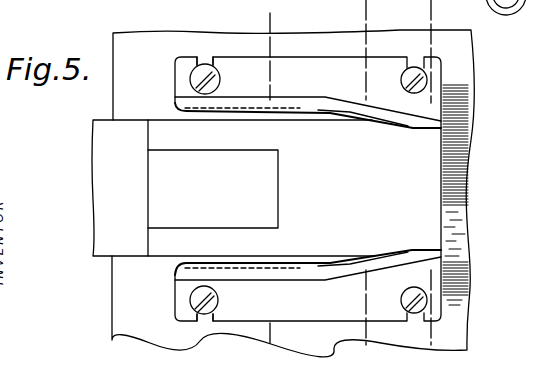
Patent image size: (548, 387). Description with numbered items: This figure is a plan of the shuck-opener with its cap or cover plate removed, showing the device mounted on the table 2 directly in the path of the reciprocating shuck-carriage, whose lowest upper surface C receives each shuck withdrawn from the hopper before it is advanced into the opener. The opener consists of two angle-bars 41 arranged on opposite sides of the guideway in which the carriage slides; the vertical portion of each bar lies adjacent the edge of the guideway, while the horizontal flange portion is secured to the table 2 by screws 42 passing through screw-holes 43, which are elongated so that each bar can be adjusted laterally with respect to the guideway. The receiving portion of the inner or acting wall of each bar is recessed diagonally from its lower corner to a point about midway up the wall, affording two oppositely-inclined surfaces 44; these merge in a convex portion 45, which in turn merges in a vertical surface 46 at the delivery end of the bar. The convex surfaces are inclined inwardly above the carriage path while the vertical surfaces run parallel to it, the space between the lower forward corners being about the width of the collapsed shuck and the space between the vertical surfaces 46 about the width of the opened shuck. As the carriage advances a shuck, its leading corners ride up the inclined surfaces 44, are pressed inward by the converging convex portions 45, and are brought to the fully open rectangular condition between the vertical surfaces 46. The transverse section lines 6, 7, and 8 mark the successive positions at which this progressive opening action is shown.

The table 2 is at (120, 301).
The surface of carriage C is at (233, 188).
The section line 6 6 is at (270, 182).
The section line 7 7 is at (365, 183).
The section line 8 8 is at (431, 183).
The angle-bar 41 is at (184, 87).
The screw 42 is at (192, 74).
The screw-hole 43 is at (207, 63).
The oppositely-inclined surface 44 is at (265, 112).
The convex portion 45 is at (356, 124).
The vertical surface 46 is at (422, 133).